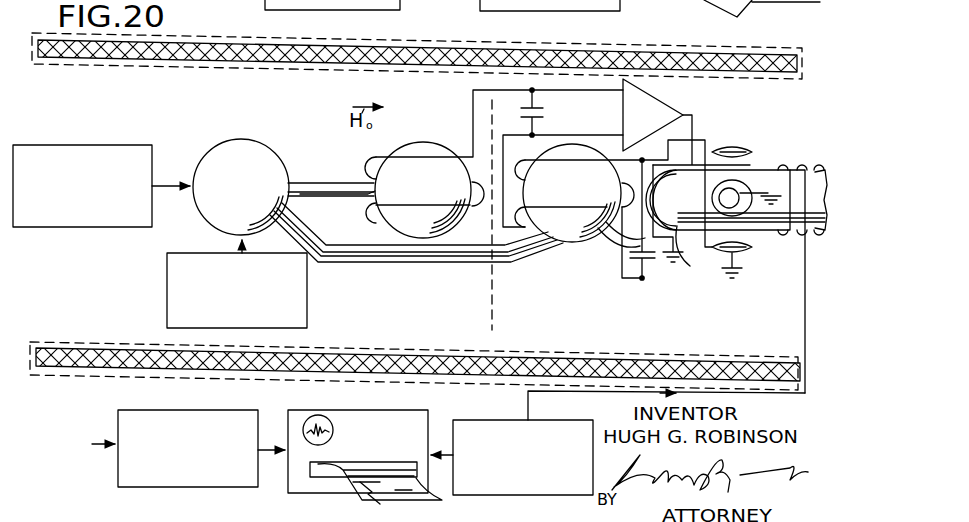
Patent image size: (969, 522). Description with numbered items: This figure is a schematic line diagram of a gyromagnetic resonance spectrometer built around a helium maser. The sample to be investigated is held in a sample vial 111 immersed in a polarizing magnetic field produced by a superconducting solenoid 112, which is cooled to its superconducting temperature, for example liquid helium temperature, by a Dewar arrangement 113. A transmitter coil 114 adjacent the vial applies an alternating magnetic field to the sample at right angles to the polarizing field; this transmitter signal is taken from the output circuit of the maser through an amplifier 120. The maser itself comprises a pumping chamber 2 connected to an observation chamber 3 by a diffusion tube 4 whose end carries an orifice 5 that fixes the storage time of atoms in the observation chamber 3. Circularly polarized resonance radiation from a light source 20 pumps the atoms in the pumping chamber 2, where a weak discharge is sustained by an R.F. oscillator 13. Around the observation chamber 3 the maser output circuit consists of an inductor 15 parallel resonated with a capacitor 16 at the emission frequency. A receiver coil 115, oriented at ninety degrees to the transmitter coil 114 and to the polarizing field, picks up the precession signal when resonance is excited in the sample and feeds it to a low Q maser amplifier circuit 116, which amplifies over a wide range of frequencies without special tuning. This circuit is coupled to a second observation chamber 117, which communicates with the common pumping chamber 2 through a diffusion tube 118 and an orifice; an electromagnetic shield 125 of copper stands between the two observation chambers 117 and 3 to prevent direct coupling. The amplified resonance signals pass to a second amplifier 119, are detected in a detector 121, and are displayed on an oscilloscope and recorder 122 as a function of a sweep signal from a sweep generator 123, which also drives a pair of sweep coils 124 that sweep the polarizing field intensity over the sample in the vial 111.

The pumping chamber 2 is at (249, 181).
The observation chamber 3 is at (432, 184).
The diffusion tube 4 is at (318, 182).
The orifice 5 is at (357, 199).
The R.F. oscillator 13 is at (167, 272).
The inductor 15 is at (412, 157).
The capacitor 16 is at (545, 110).
The circularly polarized light source 20 is at (92, 228).
The sample vial 111 is at (763, 180).
The superconducting solenoid 112 is at (638, 46).
The Dewar arrangement 113 is at (669, 44).
The transmitter coil 114 is at (753, 232).
The receiver coil 115 is at (744, 148).
The maser amplifier circuit 116 is at (612, 241).
The observation chamber 117 is at (583, 191).
The diffusion tube 118 is at (382, 258).
The second amplifier 119 is at (543, 257).
The amplifier 120 is at (672, 104).
The detector 121 is at (203, 413).
The oscilloscope and recorder 122 is at (350, 410).
The sweep generator 123 is at (505, 420).
The sweep coils 124 is at (805, 168).
The electromagnetic shield 125 is at (492, 303).